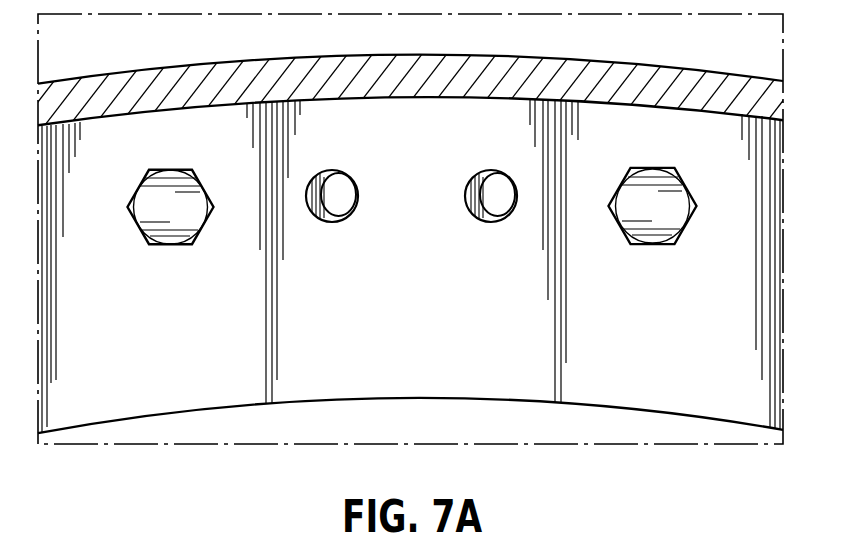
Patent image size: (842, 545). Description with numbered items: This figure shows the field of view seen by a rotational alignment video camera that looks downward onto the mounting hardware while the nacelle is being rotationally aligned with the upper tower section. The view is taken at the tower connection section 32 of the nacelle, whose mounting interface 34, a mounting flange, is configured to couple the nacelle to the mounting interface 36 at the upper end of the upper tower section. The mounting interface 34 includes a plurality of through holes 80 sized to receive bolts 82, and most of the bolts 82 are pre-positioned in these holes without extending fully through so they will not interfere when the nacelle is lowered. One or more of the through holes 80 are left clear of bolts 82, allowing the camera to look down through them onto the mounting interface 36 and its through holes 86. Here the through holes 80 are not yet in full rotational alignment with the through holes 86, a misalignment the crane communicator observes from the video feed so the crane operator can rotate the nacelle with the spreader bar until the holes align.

The tower connection section 32 is at (142, 70).
The mounting interface 34 is at (157, 344).
The mounting interface 36 is at (314, 203).
The through holes 80 is at (328, 172).
The bolts 82 is at (170, 170).
The through holes 86 is at (343, 212).